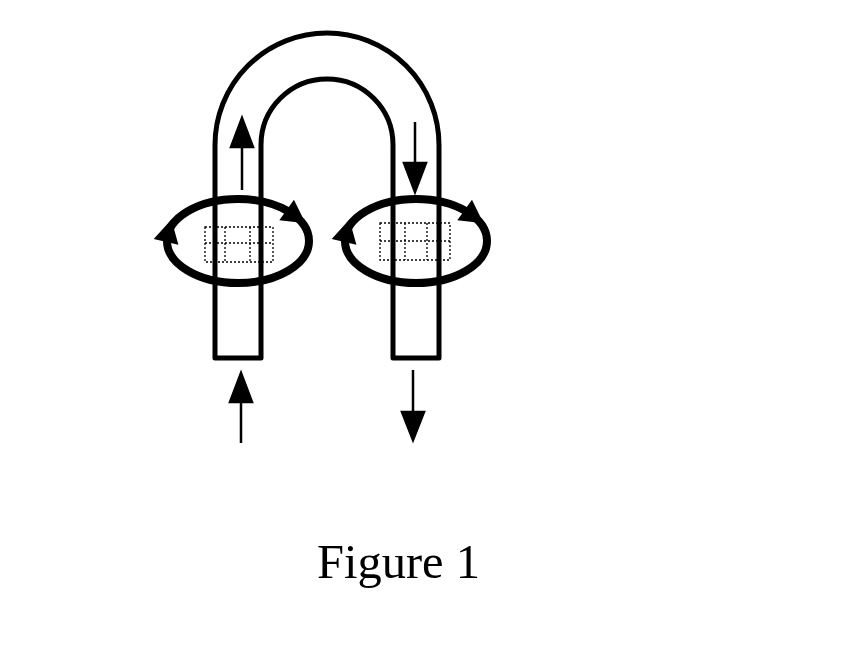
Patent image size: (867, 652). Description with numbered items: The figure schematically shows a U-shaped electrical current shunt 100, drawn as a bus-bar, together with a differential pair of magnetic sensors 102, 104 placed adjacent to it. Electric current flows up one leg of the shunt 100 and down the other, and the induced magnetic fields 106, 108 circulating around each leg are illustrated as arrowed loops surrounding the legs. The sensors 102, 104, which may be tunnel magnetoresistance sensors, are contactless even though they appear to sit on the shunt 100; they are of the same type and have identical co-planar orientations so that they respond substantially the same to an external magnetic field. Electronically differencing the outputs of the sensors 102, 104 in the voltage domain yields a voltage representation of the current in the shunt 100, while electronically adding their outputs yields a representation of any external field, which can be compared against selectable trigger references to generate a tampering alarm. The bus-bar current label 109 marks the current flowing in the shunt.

The U-shaped electrical current shunt 100 is at (425, 77).
The magnetic sensor 102 is at (472, 255).
The magnetic sensor 104 is at (240, 273).
The induced magnetic field 106 is at (681, 135).
The induced magnetic field 108 is at (165, 228).
The bus-bar current 109 is at (422, 393).